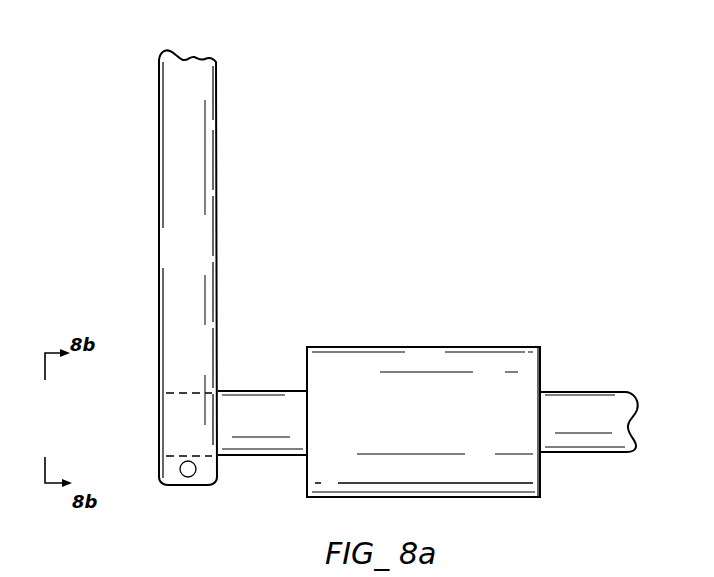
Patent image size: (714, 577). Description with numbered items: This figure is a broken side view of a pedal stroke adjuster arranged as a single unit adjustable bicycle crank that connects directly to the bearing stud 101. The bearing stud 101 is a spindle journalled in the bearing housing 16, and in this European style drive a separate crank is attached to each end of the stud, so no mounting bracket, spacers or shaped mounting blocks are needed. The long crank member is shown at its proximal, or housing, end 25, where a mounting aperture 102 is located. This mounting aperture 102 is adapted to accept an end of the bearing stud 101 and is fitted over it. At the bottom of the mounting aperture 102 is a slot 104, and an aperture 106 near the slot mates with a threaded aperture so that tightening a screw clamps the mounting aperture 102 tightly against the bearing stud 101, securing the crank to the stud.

The proximal (housing) end 25 is at (160, 351).
The bearing stud 101 is at (263, 391).
The bearing housing 16 is at (393, 347).
The mounting aperture 102 is at (160, 434).
The slot 104 is at (160, 472).
The aperture 106 is at (196, 465).